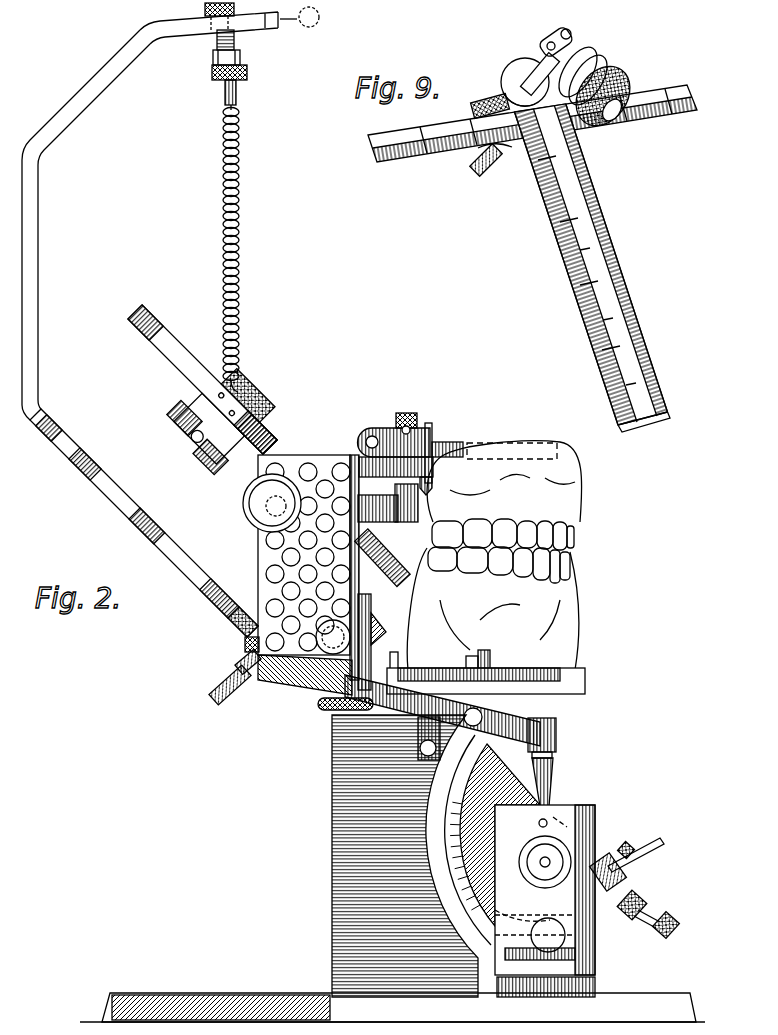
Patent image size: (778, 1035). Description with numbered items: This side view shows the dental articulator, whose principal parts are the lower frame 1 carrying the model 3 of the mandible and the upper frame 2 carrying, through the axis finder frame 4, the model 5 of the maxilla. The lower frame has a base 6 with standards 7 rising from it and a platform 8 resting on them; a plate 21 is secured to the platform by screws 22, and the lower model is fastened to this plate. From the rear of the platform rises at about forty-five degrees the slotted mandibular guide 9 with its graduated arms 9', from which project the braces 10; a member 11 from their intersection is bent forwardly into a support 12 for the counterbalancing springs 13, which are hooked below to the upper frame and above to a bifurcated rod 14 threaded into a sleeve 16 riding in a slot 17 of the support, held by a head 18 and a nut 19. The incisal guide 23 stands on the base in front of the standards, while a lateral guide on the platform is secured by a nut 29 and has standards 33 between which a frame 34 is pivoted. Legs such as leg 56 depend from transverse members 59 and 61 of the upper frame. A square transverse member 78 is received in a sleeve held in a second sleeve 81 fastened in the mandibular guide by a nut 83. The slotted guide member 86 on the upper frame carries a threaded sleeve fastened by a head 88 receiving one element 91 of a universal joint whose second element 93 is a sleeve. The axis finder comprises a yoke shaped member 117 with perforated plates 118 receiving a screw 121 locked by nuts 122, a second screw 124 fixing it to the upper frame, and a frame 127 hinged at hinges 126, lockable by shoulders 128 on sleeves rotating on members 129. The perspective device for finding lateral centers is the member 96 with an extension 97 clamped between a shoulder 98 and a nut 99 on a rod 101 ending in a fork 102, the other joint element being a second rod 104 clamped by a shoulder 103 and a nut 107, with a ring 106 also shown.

In FIG. 2, the lower frame 1 is at (230, 613).
In FIG. 2, the upper frame 2 is at (272, 446).
In FIG. 2, the model of the mandible 3 is at (560, 598).
In FIG. 2, the axis finder frame 4 is at (380, 428).
In FIG. 2, the model of the maxilla 5 is at (572, 494).
In FIG. 2, the base 6 is at (255, 1012).
In FIG. 2, the standards 7 is at (333, 860).
In FIG. 2, the platform 8 is at (560, 696).
In FIG. 2, the mandibular guide 9 is at (140, 518).
In FIG. 2, the arms 9' is at (68, 427).
In FIG. 2, the braces 10 is at (38, 276).
In FIG. 2, the member 11 is at (92, 95).
In FIG. 2, the support 12 is at (172, 40).
In FIG. 2, the springs 13 is at (240, 242).
In FIG. 2, the bifurcated rod 14 is at (236, 92).
In FIG. 2, the sleeve 16 is at (217, 42).
In FIG. 2, the slot 17 is at (299, 17).
In FIG. 2, the head 18 is at (205, 8).
In FIG. 2, the nut 19 is at (212, 75).
In FIG. 2, the plate 21 is at (562, 675).
In FIG. 2, the screws 22 is at (491, 662).
In FIG. 2, the incisal guide 23 is at (597, 822).
In FIG. 2, the nut 29 is at (320, 707).
In FIG. 2, the standards 33 is at (370, 616).
In FIG. 2, the frame 34 is at (383, 629).
In FIG. 2, the leg 56 is at (551, 770).
In FIG. 2, the transverse member 59 is at (558, 736).
In FIG. 2, the transverse member 61 is at (396, 522).
In FIG. 2, the transverse member 78 is at (218, 688).
In FIG. 2, the second sleeve 81 is at (236, 663).
In FIG. 2, the nut 83 is at (245, 644).
In FIG. 2, the slotted guide member 86 is at (255, 431).
In FIG. 2, the head 88 is at (262, 400).
In FIG. 2, the element of universal joint 91 is at (190, 418).
In FIG. 2, the second element of universal joint 93 is at (205, 468).
In FIG. 2, the yoke shaped member 117 is at (432, 476).
In FIG. 2, the plates 118 is at (262, 561).
In FIG. 2, the screw 121 is at (265, 510).
In FIG. 2, the nuts 122 is at (243, 510).
In FIG. 2, the second screw 124 is at (322, 662).
In FIG. 2, the hinges 126 is at (360, 440).
In FIG. 2, the frame 127 is at (446, 441).
In FIG. 2, the shoulders 128 is at (430, 422).
In FIG. 2, the members 129 is at (400, 414).
In FIG. 9, the member 96 is at (601, 226).
In FIG. 9, the extension 97 is at (488, 104).
In FIG. 9, the shoulder 98 is at (512, 70).
In FIG. 9, the nut 99 is at (508, 162).
In FIG. 9, the rod 101 is at (548, 67).
In FIG. 9, the fork 102 is at (548, 47).
In FIG. 9, the shoulder 103 is at (572, 37).
In FIG. 9, the second rod 104 is at (598, 54).
In FIG. 9, the ring 106 is at (610, 64).
In FIG. 9, the nut 107 is at (630, 92).